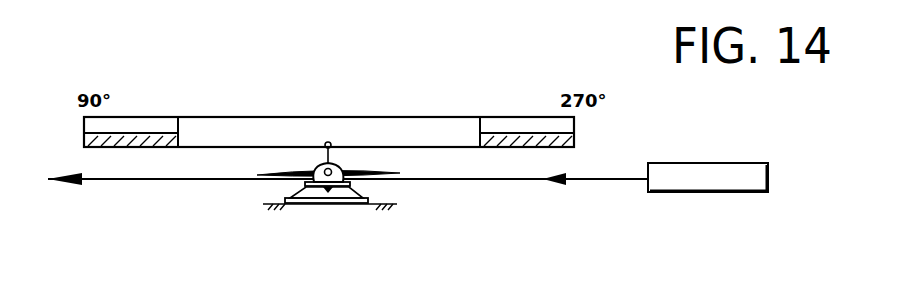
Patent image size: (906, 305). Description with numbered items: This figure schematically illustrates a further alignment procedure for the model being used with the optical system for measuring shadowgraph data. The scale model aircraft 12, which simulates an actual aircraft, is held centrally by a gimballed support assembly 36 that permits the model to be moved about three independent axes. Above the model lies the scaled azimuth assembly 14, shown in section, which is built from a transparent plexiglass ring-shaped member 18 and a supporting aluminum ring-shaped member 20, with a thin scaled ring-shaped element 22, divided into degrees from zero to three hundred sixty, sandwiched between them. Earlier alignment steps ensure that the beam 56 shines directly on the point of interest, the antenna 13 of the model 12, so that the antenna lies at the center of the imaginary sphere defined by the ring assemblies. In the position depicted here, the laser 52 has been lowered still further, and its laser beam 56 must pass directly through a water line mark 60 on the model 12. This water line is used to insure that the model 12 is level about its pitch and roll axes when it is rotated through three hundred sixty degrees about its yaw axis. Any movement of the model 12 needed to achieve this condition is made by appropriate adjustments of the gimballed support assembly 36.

The scale model aircraft 12 is at (248, 196).
The antenna 13 is at (331, 143).
The scaled azimuth assembly 14 is at (486, 110).
The ring-shaped member 18 is at (560, 121).
The supporting ring-shaped member 20 is at (545, 147).
The scaled ring-shaped element 22 is at (157, 138).
The gimballed support assembly 36 is at (388, 192).
The laser 52 is at (768, 181).
The laser beam 56 is at (593, 180).
The water line mark 60 is at (341, 172).